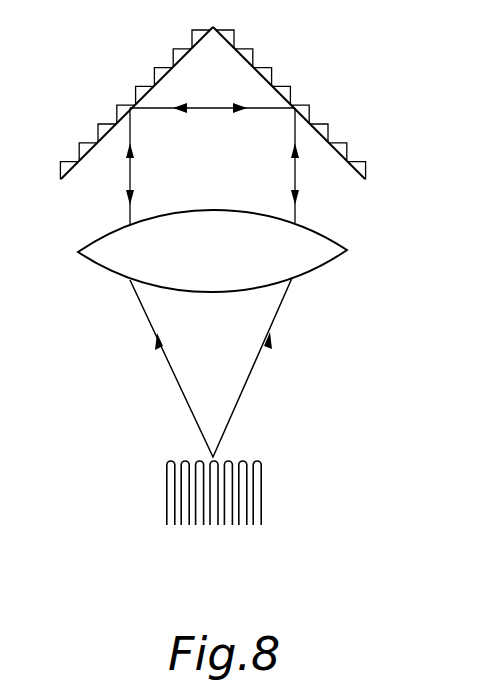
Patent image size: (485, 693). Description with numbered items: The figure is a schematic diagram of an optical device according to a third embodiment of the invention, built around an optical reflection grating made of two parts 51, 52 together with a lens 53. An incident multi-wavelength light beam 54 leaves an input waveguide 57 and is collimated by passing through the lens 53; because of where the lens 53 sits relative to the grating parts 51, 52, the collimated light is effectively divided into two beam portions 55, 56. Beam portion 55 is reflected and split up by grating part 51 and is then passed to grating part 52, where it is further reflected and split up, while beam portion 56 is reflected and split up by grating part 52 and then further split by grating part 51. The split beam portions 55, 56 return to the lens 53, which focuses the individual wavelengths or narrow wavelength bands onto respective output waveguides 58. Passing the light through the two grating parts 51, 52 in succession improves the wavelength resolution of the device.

The grating part 51 is at (150, 89).
The grating part 52 is at (276, 88).
The lens 53 is at (313, 245).
The incident multi-wavelength light beam 54 is at (257, 363).
The beam portion 55 is at (131, 128).
The beam portion 56 is at (294, 128).
The input waveguide 57 is at (214, 525).
The output waveguides 58 is at (172, 525).